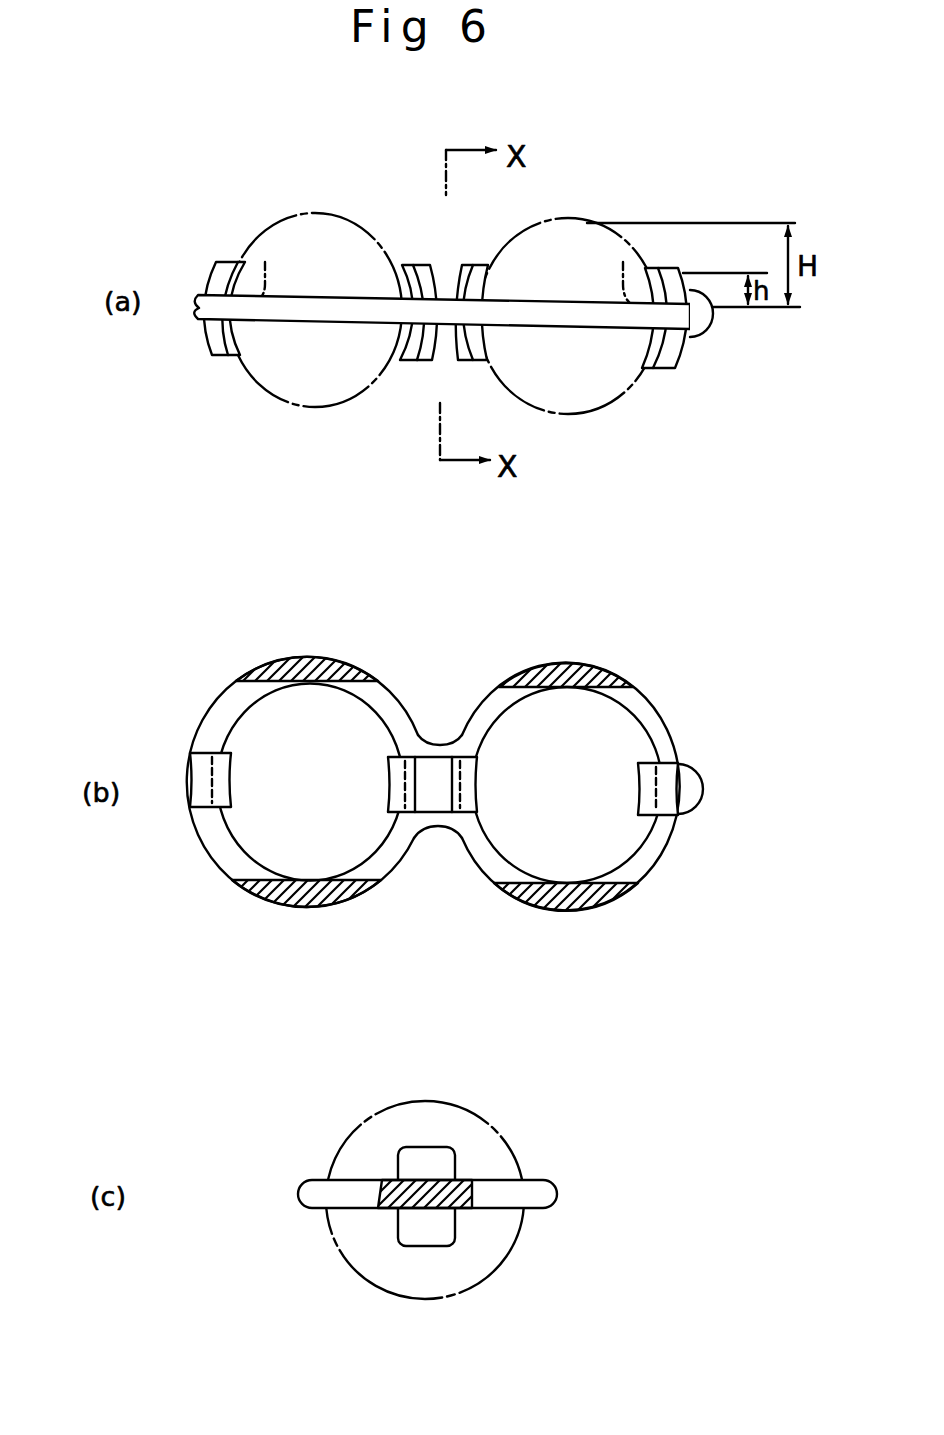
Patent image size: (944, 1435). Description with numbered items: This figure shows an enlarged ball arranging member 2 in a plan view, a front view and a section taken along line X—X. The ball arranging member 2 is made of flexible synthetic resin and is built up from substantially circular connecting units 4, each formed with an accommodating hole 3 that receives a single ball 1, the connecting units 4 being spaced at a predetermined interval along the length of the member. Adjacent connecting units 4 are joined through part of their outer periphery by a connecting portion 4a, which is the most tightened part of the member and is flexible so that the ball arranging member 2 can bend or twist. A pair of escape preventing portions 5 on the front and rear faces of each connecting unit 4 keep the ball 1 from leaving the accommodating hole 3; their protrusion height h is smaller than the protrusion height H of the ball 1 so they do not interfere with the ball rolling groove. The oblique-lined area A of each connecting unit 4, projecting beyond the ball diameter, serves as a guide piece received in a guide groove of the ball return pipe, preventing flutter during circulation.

The ball 1 is at (278, 400).
The ball arranging member 2 is at (291, 294).
The accommodating hole 3 is at (265, 262).
The connecting unit 4 is at (355, 321).
The connecting portion 4a is at (445, 272).
The escape preventing portion 5 is at (216, 268).
The area A is at (345, 673).